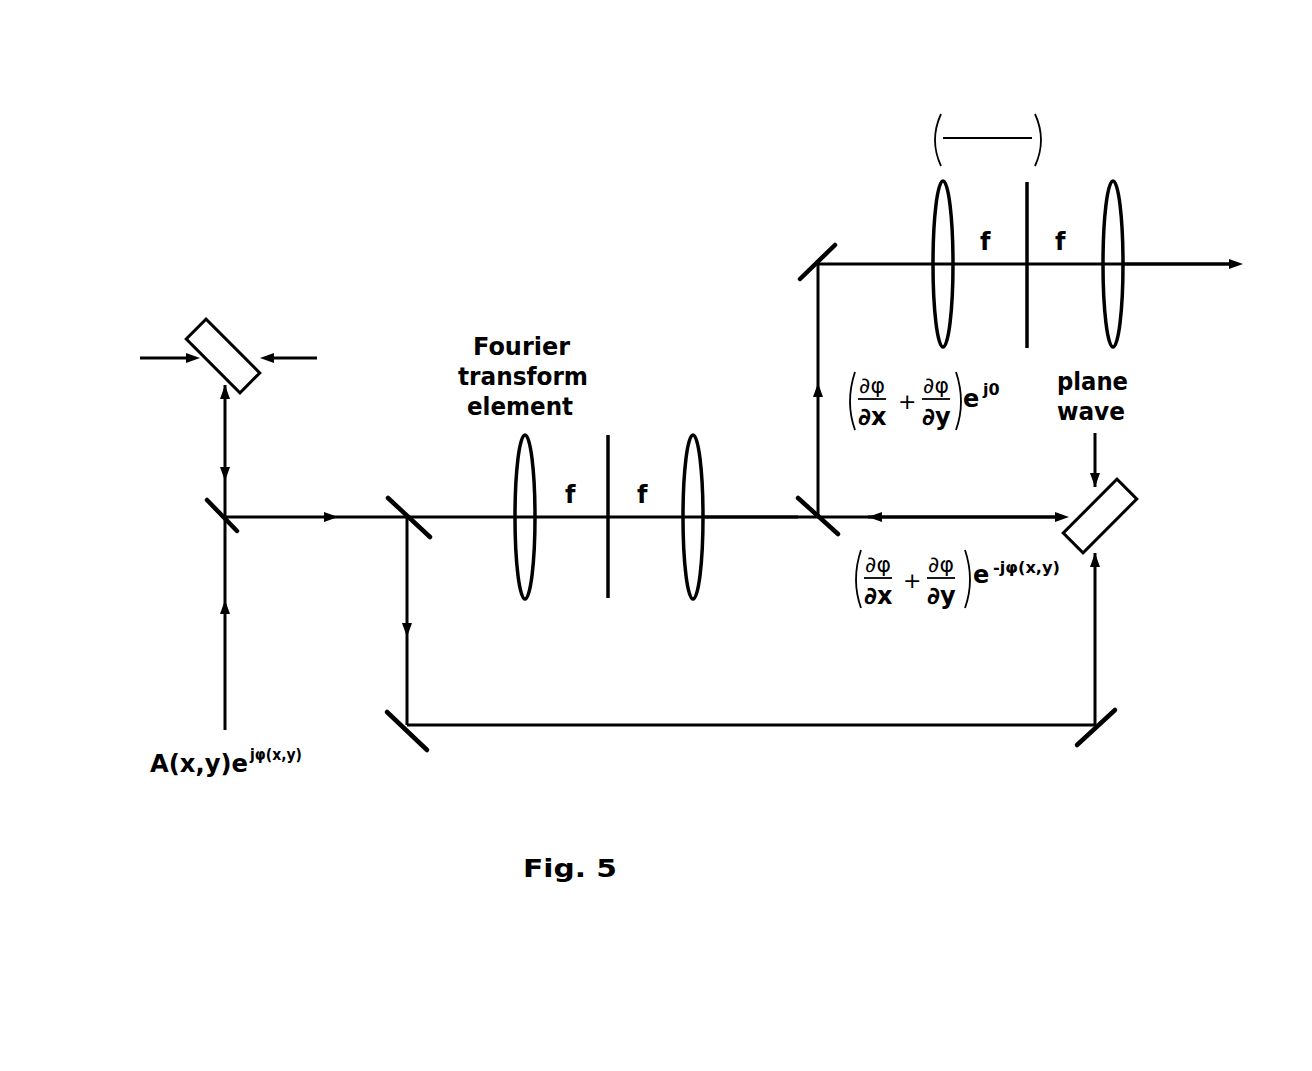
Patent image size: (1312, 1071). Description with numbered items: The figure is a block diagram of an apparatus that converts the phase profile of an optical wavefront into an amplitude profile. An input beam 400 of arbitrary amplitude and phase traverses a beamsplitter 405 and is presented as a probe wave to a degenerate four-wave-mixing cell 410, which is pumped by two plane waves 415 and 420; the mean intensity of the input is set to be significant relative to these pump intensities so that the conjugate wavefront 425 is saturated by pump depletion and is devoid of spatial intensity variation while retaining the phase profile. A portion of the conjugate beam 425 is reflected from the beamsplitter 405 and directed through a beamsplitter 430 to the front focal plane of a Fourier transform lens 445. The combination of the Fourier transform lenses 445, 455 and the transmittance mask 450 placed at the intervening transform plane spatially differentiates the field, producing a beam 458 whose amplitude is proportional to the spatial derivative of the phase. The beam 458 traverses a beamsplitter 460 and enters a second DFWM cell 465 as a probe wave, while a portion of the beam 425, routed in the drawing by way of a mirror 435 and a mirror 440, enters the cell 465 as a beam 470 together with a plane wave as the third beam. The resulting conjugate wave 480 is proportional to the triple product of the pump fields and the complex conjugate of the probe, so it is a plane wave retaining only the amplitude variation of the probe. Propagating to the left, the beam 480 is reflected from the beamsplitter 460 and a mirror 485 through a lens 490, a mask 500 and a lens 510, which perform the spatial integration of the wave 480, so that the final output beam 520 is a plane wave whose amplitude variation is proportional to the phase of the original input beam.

The input beam 400 is at (230, 690).
The beamsplitter 405 is at (207, 500).
The degenerate four-wave-mixing cell 410 is at (203, 330).
The plane wave 415 is at (150, 362).
The plane wave 420 is at (293, 362).
The conjugate wavefront 425 is at (227, 460).
The beamsplitter 430 is at (403, 507).
The mirror 435 is at (430, 747).
The mirror 440 is at (1107, 710).
The Fourier transform lens 445 is at (517, 463).
The transmittance mask 450 is at (603, 562).
The Fourier transform lens 455 is at (685, 457).
The beam 458 is at (760, 493).
The beamsplitter 460 is at (828, 537).
The second DFWM cell 465 is at (1123, 478).
The beam 470 is at (1098, 600).
The conjugate wave 480 is at (910, 512).
The mirror 485 is at (807, 280).
The lens 490 is at (937, 191).
The mask 500 is at (1030, 197).
The lens 510 is at (1125, 200).
The final output beam 520 is at (1165, 268).